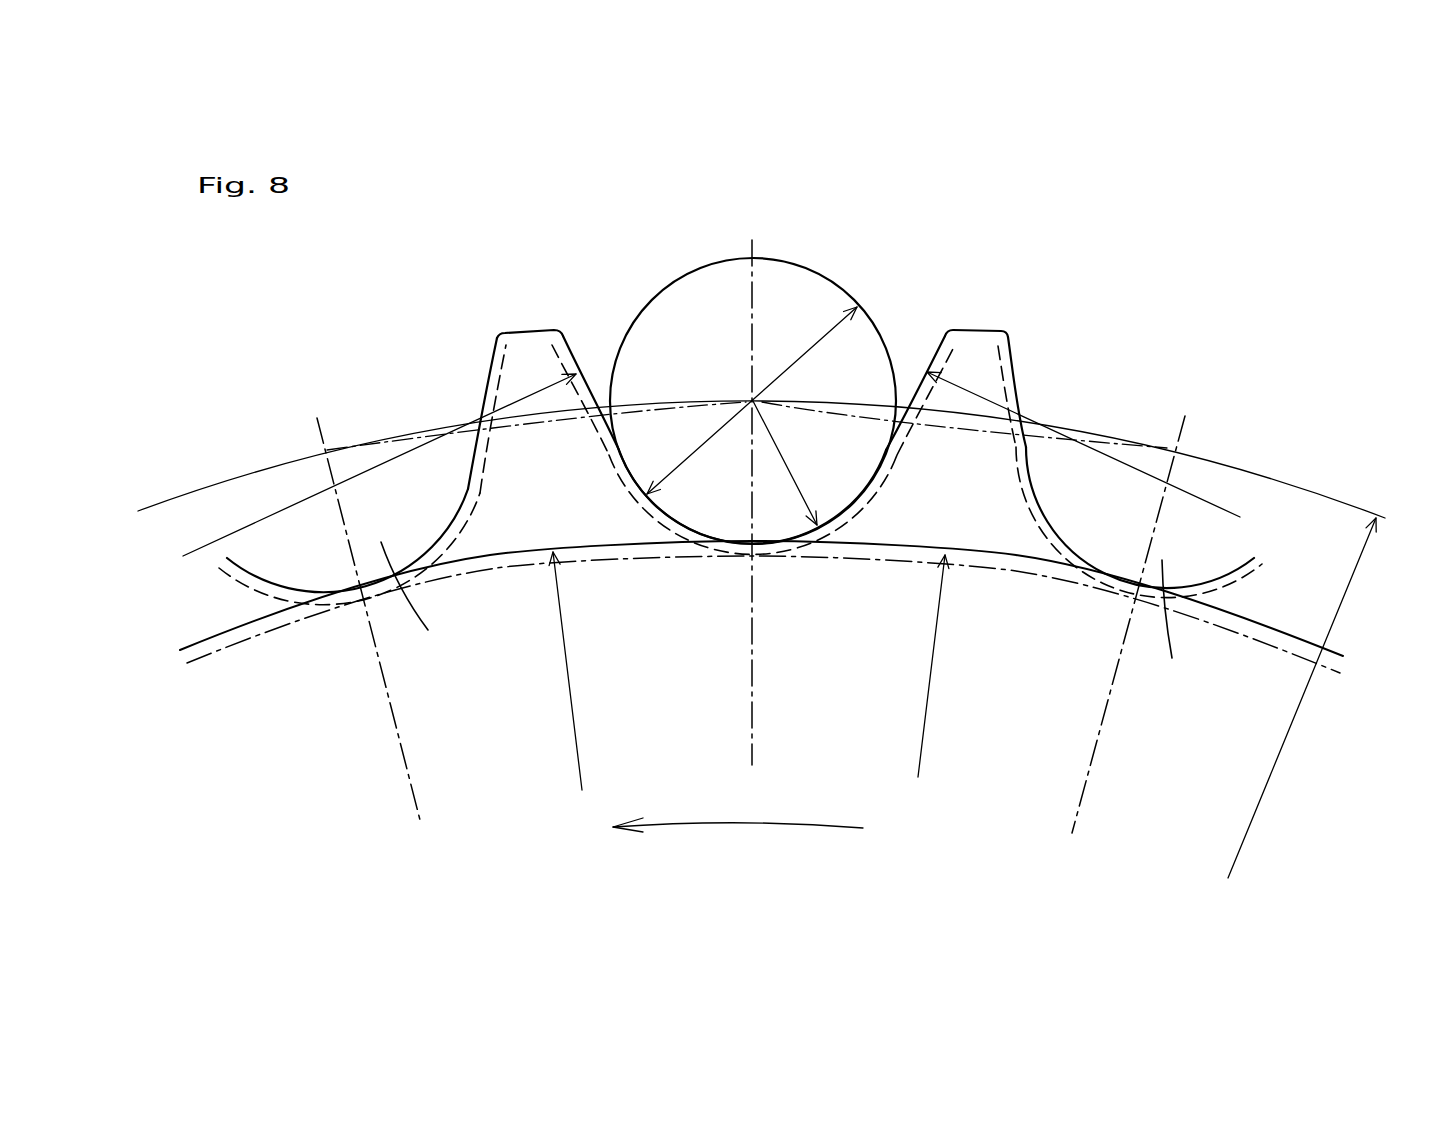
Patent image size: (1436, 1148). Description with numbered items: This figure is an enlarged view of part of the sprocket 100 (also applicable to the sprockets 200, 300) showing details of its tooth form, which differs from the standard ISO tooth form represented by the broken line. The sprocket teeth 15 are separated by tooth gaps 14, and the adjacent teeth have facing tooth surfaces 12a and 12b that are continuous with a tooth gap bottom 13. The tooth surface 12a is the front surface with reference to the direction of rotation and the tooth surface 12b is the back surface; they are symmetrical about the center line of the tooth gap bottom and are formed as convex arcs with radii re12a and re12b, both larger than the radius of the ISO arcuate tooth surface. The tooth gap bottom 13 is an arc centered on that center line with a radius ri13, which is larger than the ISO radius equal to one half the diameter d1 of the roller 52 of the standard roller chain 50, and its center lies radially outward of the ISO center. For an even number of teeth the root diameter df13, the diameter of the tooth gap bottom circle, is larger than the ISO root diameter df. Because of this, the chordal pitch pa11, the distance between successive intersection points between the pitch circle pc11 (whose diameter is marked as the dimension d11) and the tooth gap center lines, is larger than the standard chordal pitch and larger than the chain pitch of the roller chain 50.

The sprocket 100 is at (761, 570).
The sprocket (second embodiment) 200 is at (765, 888).
The sprocket (third embodiment) 300 is at (827, 888).
The standard roller chain 50 is at (764, 347).
The roller 52 is at (700, 272).
The sprocket tooth 15 is at (523, 333).
The tooth surface 12a is at (491, 354).
The tooth surface 12b is at (569, 341).
The tooth gap bottom 13 is at (301, 590).
The tooth gap 14 is at (793, 607).
The roller diameter d1 is at (752, 400).
The radius of the tooth gap bottom arc ri13 is at (794, 463).
The pitch circle pc11 is at (1257, 473).
The chordal pitch pa11 is at (747, 430).
The radius of tooth surface 12a re12a is at (1091, 447).
The radius of tooth surface 12b re12b is at (379, 465).
The pitch diameter d11 is at (1288, 713).
The root diameter df13 is at (695, 692).
The root diameter of the ISO tooth form df is at (914, 682).